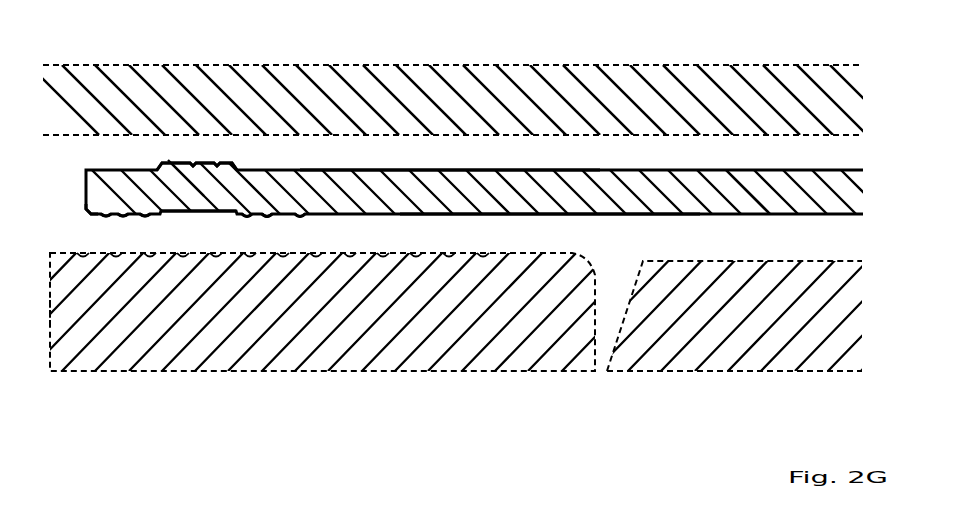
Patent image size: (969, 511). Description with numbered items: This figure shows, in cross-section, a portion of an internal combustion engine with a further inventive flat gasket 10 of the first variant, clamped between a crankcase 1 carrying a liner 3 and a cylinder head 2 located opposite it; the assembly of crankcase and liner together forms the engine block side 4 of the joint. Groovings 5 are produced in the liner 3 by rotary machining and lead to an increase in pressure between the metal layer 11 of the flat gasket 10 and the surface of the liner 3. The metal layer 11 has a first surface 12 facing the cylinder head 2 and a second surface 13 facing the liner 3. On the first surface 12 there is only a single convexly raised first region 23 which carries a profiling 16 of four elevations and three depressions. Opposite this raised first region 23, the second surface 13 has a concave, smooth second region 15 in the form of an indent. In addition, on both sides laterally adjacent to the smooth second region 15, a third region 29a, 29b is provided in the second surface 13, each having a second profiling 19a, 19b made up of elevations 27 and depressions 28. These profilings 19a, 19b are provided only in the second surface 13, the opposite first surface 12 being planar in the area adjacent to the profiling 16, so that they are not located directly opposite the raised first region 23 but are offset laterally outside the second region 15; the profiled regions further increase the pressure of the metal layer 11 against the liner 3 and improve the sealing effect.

The crankcase 1 is at (716, 355).
The cylinder head 2 is at (468, 90).
The liner 3 is at (316, 357).
The substrate assembly 4 is at (5, 336).
The groovings 5 is at (459, 256).
The flat gasket 10 is at (838, 190).
The metal layer 11 is at (732, 204).
The first surface 12 is at (567, 171).
The second surface 13 is at (633, 216).
The second region 15 is at (200, 213).
The profiling 16 is at (184, 175).
The second profiling 19a is at (88, 213).
The second profiling 19b is at (253, 217).
The first region 23 is at (238, 163).
The elevations 27 is at (132, 216).
The depressions 28 is at (146, 216).
The third region 29a is at (107, 217).
The third region 29b is at (278, 216).